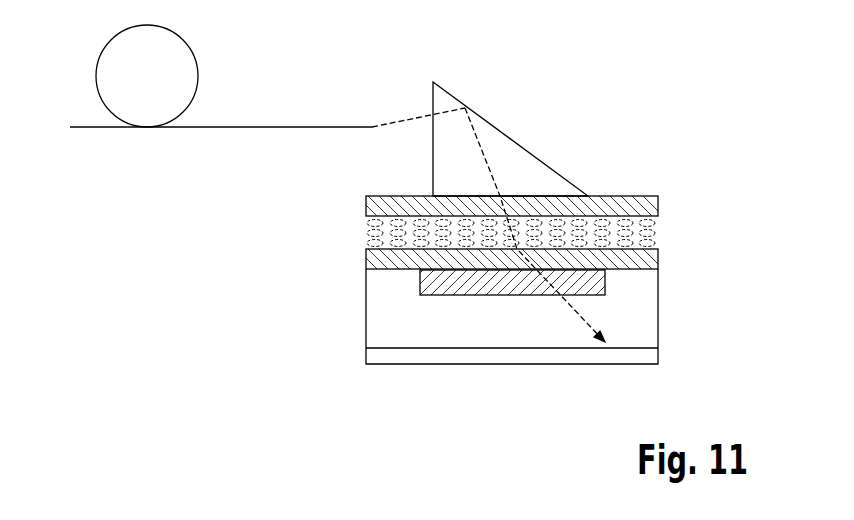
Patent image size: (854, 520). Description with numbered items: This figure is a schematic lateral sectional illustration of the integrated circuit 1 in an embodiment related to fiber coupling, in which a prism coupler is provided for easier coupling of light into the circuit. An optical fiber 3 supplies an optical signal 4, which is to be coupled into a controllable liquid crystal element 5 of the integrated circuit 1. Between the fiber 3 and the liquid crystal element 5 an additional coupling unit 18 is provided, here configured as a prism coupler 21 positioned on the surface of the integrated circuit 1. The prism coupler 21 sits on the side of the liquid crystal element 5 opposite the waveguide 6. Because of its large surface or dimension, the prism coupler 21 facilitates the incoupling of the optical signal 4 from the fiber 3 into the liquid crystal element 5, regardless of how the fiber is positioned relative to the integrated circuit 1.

The integrated circuit 1 is at (562, 365).
The optical fiber 3 is at (100, 58).
The optical signal 4 is at (398, 120).
The controllable liquid crystal element 5 is at (632, 182).
The waveguide 6 is at (460, 288).
The coupling unit 18 is at (510, 120).
The prism coupler 21 is at (516, 115).